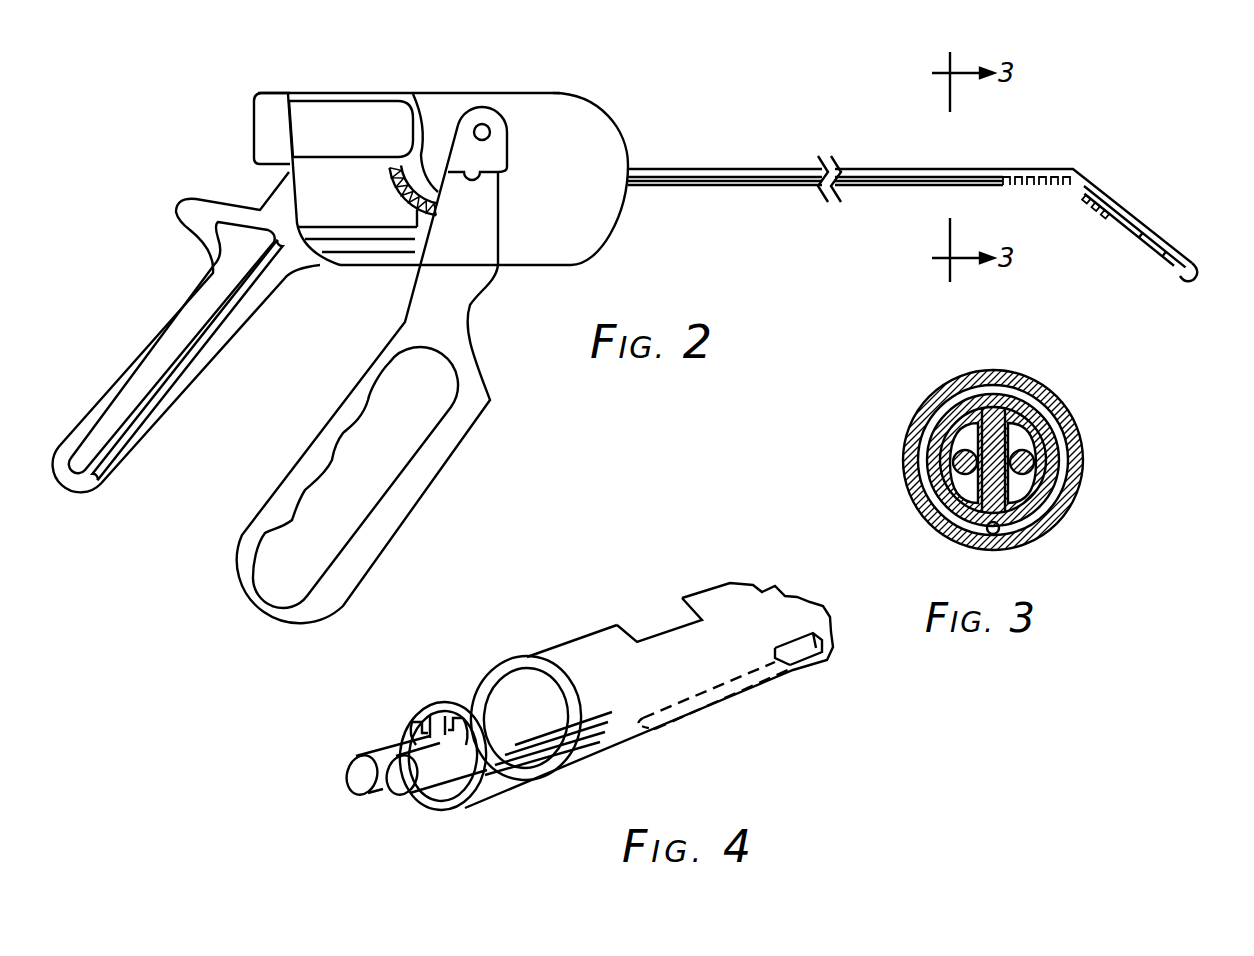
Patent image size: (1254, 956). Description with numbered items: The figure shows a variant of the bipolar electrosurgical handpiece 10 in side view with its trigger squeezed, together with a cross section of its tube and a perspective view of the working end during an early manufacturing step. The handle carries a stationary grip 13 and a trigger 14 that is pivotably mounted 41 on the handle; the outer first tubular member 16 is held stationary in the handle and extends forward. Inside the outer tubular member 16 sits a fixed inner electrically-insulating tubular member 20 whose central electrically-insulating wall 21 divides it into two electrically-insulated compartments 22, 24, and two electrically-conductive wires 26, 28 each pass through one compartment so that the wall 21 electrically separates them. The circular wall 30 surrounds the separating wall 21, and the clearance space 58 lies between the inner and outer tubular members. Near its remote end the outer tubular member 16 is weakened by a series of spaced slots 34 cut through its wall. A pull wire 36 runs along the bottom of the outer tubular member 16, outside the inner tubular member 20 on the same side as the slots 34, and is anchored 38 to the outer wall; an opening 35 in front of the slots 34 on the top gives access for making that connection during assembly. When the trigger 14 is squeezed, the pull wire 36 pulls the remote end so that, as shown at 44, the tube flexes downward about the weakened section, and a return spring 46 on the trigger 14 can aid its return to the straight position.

In FIG. 2, the bipolar handpiece 10 is at (593, 86).
In FIG. 2, the grip 13 is at (213, 347).
In FIG. 2, the trigger 14 is at (448, 438).
In FIG. 2, the outer first tubular member 16 is at (715, 177).
In FIG. 3, the outer first tubular member 16 is at (1070, 430).
In FIG. 4, the outer first tubular member 16 is at (565, 650).
In FIG. 3, the inner tubular member 20 is at (1030, 400).
In FIG. 4, the inner tubular member 20 is at (505, 773).
In FIG. 3, the electrically-insulating wall 21 is at (990, 437).
In FIG. 4, the electrically-insulating wall 21 is at (437, 720).
In FIG. 3, the electrically-insulated compartment 22 is at (1015, 498).
In FIG. 4, the electrically-insulated compartment 22 is at (450, 725).
In FIG. 3, the electrically-insulated compartment 24 is at (962, 490).
In FIG. 4, the electrically-insulated compartment 24 is at (422, 727).
In FIG. 3, the electrically-conductive wire 26 is at (1040, 465).
In FIG. 4, the electrically-conductive wire 26 is at (418, 790).
In FIG. 3, the electrically-conductive wire 28 is at (962, 462).
In FIG. 4, the electrically-conductive wire 28 is at (377, 752).
In FIG. 4, the circular wall 30 is at (527, 733).
In FIG. 2, the spaced slots 34 is at (1077, 185).
In FIG. 4, the spaced slots 34 is at (795, 667).
In FIG. 2, the opening 35 is at (1160, 233).
In FIG. 4, the opening 35 is at (653, 620).
In FIG. 3, the pull wire 36 is at (997, 535).
In FIG. 4, the pull wire 36 is at (730, 702).
In FIG. 4, the anchor 38 is at (660, 732).
In FIG. 2, the pivot mounting 41 is at (486, 126).
In FIG. 2, the flexed remote end 44 is at (1128, 191).
In FIG. 2, the return spring 46 is at (432, 202).
In FIG. 3, the clearance space 58 is at (945, 407).